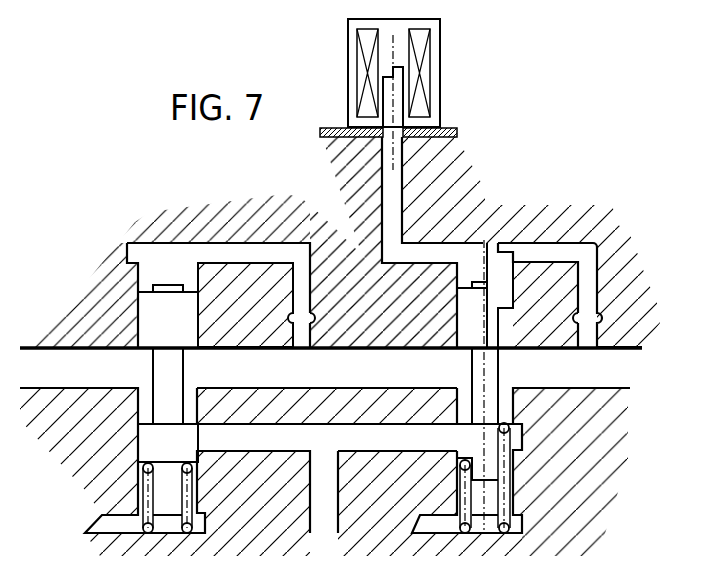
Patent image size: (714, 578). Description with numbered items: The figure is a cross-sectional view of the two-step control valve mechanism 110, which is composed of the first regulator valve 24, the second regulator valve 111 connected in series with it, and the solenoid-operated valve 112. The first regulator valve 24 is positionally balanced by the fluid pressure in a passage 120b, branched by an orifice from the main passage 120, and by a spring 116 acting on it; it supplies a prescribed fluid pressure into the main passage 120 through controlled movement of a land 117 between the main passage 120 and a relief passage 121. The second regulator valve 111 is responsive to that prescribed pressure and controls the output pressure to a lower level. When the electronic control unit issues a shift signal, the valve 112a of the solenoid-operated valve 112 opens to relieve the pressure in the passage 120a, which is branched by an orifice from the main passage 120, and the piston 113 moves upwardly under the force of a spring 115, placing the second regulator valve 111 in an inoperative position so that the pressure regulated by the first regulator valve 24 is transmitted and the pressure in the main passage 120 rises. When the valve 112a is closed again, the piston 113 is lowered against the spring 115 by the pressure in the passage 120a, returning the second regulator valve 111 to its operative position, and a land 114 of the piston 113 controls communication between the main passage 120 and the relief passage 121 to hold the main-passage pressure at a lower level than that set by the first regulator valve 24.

The first regulator valve 24 is at (155, 309).
The control valve mechanism 110 is at (512, 162).
The second regulator valve 111 is at (433, 537).
The solenoid-operated valve 112 is at (432, 58).
The valve 112a is at (398, 103).
The piston 113 is at (490, 362).
The land 114 is at (472, 445).
The spring 115 is at (515, 535).
The spring 116 is at (148, 528).
The land 117 is at (160, 440).
The main passage 120 is at (387, 362).
The passage 120a is at (555, 250).
The passage 120b is at (247, 250).
The relief passage 121 is at (323, 504).